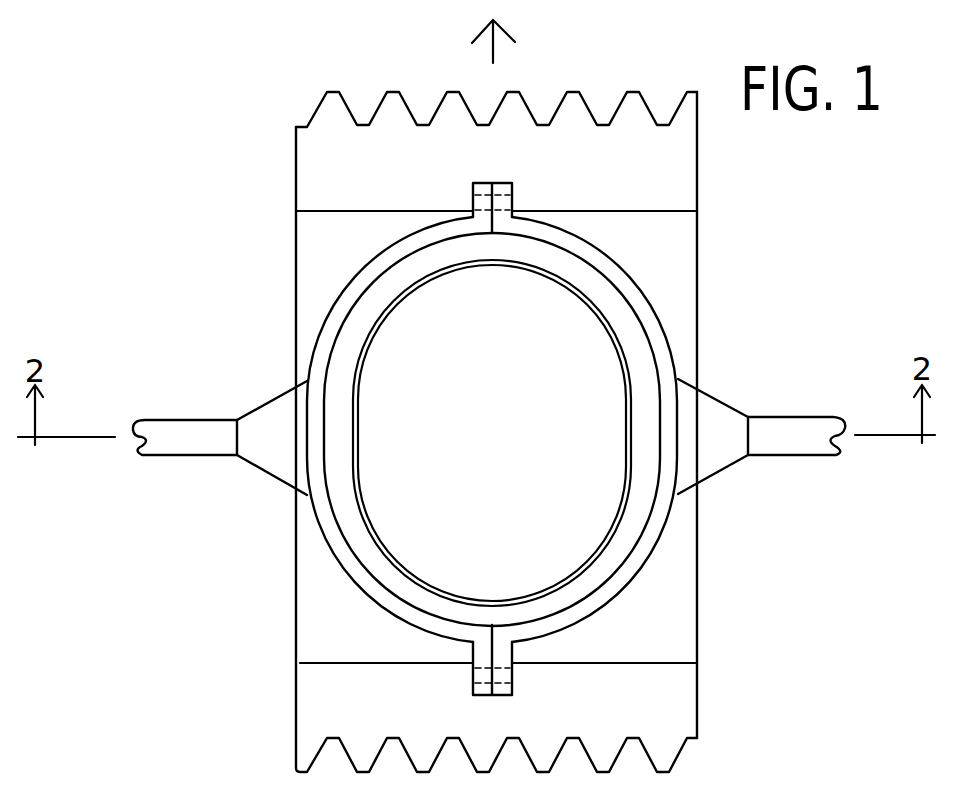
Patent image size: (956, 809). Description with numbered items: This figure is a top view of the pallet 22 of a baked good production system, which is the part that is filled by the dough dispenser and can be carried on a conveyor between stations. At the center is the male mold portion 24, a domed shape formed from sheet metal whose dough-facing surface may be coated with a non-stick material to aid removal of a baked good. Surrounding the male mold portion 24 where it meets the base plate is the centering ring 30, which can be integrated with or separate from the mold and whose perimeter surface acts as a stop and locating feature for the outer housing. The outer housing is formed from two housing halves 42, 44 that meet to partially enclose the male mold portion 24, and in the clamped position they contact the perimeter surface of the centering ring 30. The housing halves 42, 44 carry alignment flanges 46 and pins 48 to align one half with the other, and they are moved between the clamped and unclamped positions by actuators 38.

The pallet 22 is at (317, 615).
The male mold portion 24 is at (377, 498).
The centering ring 30 is at (615, 560).
The actuators 38 is at (192, 420).
The housing half 42 is at (353, 282).
The housing half 44 is at (648, 290).
The alignment flanges 46 is at (473, 184).
The pins 48 is at (473, 197).